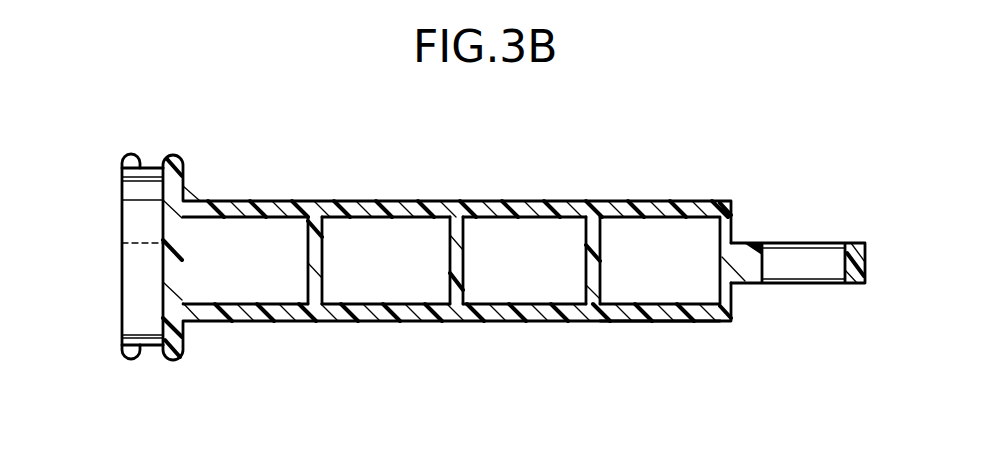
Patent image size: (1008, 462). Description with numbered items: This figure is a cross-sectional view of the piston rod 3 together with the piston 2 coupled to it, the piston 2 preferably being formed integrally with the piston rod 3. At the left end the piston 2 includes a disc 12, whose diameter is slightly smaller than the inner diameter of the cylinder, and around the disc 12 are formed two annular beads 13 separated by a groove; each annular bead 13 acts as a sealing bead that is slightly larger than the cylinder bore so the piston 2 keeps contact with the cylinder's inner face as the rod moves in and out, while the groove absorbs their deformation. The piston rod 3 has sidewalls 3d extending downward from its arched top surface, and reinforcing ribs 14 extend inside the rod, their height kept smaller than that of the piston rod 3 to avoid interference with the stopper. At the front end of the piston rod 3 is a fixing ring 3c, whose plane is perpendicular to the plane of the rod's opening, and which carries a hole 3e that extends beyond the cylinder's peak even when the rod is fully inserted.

The piston 2 is at (183, 178).
The piston rod 3 is at (512, 201).
The fixing ring 3c is at (858, 252).
The sidewalls 3d is at (628, 312).
The hole 3e is at (808, 268).
The disc 12 is at (128, 262).
The annular bead 13 is at (131, 160).
The reinforcing ribs 14 is at (314, 243).